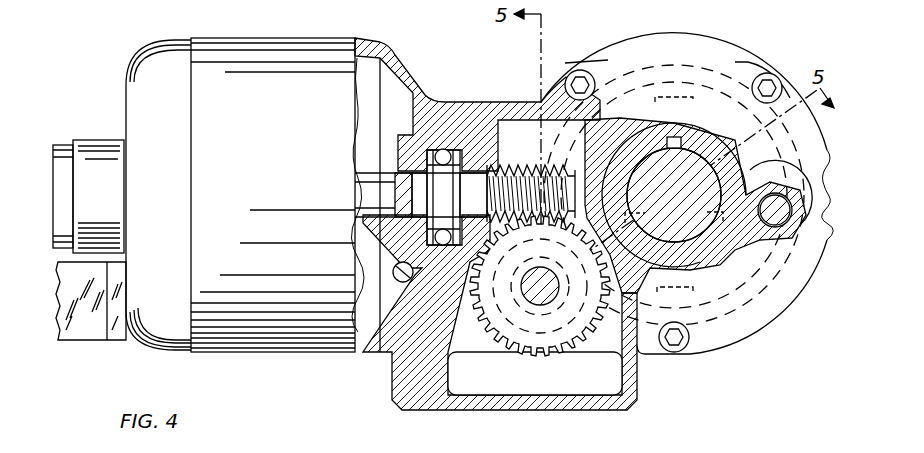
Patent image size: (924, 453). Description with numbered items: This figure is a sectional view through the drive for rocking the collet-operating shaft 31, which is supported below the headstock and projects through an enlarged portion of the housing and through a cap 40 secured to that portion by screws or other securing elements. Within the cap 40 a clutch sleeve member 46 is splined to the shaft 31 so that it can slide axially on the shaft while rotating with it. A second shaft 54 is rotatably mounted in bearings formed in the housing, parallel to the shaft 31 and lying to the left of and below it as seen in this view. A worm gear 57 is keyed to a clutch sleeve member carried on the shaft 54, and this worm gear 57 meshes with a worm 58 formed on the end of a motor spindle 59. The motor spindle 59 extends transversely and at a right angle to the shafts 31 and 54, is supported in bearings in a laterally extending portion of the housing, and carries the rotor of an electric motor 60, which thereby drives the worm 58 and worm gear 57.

The shaft 31 is at (706, 215).
The cap 40 is at (724, 45).
The clutch sleeve member 46 is at (700, 140).
The shaft 54 is at (544, 300).
The worm gear 57 is at (550, 355).
The worm 58 is at (528, 170).
The motor spindle 59 is at (460, 138).
The electric motor 60 is at (290, 52).